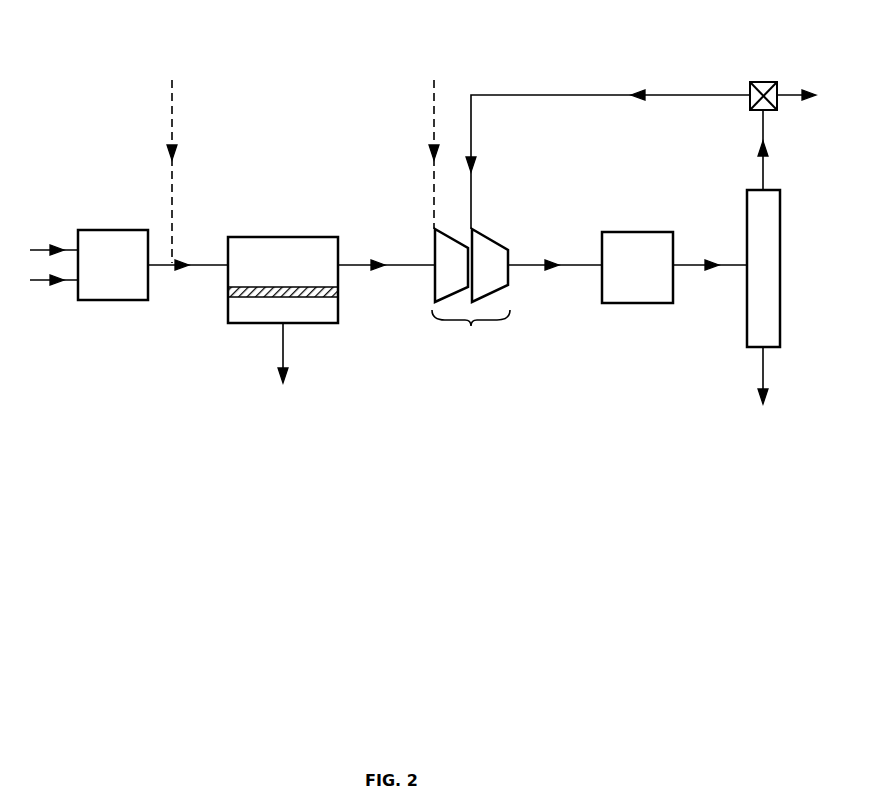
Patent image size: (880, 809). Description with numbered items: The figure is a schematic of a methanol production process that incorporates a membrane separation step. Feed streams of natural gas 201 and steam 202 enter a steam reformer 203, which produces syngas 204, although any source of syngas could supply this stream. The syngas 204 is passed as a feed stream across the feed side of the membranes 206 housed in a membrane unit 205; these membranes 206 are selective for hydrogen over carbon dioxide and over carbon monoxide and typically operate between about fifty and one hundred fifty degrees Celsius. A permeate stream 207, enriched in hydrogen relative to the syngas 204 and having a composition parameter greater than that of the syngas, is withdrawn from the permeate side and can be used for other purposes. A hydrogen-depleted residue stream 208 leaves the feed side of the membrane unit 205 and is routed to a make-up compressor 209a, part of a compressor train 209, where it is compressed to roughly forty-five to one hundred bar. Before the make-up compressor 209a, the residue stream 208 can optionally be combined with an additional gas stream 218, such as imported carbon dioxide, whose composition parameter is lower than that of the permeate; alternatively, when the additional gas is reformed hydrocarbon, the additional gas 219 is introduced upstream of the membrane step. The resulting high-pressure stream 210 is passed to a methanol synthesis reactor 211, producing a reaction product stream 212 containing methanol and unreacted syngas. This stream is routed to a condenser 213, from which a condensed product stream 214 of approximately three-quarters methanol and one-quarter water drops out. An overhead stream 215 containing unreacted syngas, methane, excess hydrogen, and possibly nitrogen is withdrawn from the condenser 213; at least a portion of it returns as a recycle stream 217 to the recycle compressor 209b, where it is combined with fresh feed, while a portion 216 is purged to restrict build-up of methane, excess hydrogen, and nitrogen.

The natural gas feed stream 201 is at (54, 239).
The steam feed stream 202 is at (54, 290).
The steam reformer 203 is at (110, 300).
The syngas 204 is at (188, 290).
The membrane unit 205 is at (269, 237).
The membranes 206 is at (338, 296).
The permeate stream 207 is at (282, 378).
The residue stream 208 is at (386, 277).
The compressor train 209 is at (471, 328).
The make-up compressor 209a is at (435, 248).
The recycle compressor 209b is at (495, 232).
The high-pressure stream 210 is at (555, 278).
The methanol synthesis reactor 211 is at (635, 303).
The reaction product stream 212 is at (710, 278).
The condenser 213 is at (747, 327).
The condensed product stream 214 is at (763, 389).
The overhead stream 215 is at (783, 150).
The purge portion 216 is at (786, 91).
The recycle stream 217 is at (608, 152).
The additional gas stream 218 is at (435, 130).
The additional gas 219 is at (173, 147).